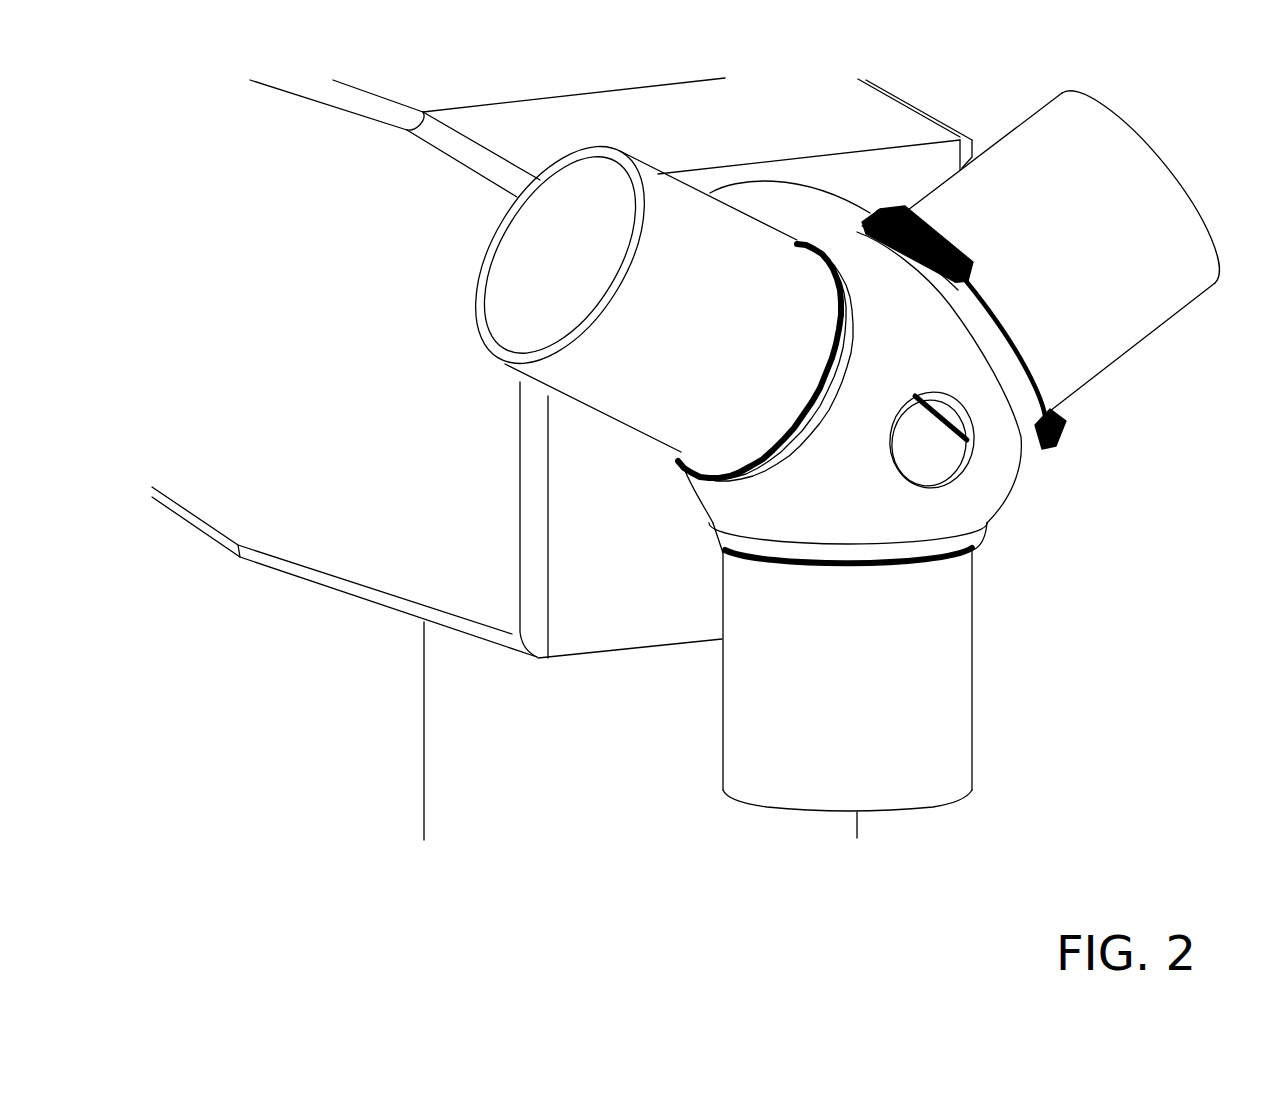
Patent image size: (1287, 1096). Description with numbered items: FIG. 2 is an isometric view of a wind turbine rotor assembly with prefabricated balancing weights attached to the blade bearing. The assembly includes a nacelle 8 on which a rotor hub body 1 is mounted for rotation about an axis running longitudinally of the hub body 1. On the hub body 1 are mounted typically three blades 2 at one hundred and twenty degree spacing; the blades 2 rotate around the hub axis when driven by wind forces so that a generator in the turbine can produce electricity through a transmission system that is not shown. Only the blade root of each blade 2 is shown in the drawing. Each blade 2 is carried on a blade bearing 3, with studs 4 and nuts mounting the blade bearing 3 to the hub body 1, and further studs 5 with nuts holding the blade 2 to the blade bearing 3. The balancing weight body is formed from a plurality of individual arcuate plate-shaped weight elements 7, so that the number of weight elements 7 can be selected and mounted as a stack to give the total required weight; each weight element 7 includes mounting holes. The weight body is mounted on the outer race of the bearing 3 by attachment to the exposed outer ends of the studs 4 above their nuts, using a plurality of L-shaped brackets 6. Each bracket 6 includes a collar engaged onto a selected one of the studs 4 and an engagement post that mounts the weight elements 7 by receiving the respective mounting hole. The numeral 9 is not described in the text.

The rotor hub body 1 is at (987, 487).
The blade 2 is at (652, 410).
The blade bearing 3 is at (978, 535).
The stud 4 is at (822, 372).
The stud 5 is at (931, 426).
The L-shaped bracket 6 is at (957, 232).
The weight element 7 is at (963, 252).
The nacelle 8 is at (320, 468).
The support rod 9 is at (477, 770).